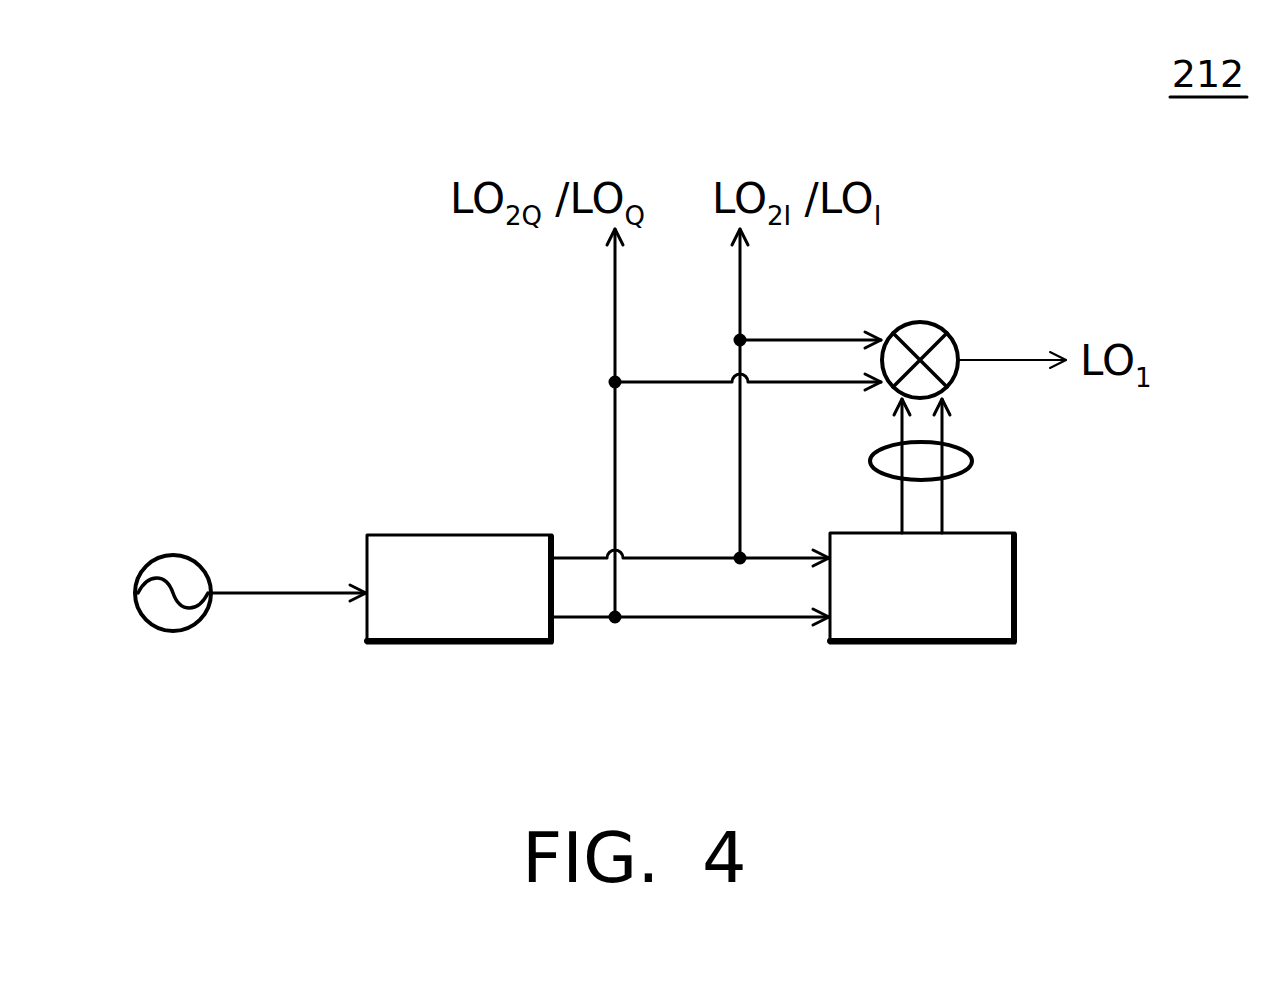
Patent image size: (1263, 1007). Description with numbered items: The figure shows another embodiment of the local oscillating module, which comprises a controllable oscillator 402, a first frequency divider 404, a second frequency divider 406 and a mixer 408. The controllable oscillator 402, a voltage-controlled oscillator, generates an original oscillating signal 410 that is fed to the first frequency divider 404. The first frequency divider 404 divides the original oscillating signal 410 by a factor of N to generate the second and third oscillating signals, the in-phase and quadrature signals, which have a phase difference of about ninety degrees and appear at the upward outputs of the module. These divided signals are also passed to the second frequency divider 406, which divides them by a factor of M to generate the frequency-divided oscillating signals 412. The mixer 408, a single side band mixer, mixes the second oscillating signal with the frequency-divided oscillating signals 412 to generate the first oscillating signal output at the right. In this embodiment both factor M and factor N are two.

The controllable oscillator 402 is at (170, 556).
The first frequency divider 404 is at (460, 533).
The second frequency divider 406 is at (973, 532).
The mixer 408 is at (920, 323).
The original oscillating signal 410 is at (302, 592).
The frequency-divided oscillating signals 412 is at (975, 460).